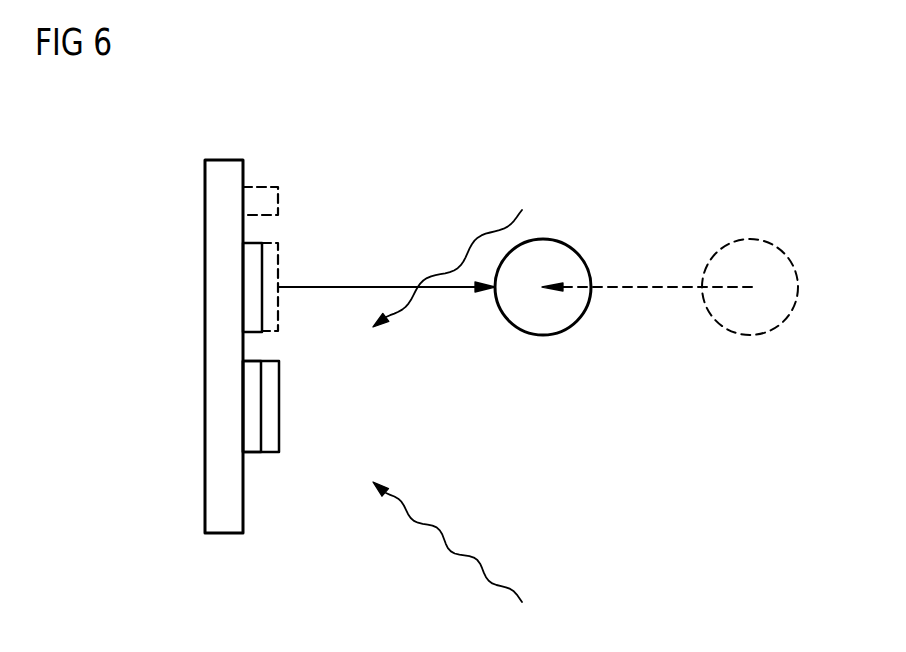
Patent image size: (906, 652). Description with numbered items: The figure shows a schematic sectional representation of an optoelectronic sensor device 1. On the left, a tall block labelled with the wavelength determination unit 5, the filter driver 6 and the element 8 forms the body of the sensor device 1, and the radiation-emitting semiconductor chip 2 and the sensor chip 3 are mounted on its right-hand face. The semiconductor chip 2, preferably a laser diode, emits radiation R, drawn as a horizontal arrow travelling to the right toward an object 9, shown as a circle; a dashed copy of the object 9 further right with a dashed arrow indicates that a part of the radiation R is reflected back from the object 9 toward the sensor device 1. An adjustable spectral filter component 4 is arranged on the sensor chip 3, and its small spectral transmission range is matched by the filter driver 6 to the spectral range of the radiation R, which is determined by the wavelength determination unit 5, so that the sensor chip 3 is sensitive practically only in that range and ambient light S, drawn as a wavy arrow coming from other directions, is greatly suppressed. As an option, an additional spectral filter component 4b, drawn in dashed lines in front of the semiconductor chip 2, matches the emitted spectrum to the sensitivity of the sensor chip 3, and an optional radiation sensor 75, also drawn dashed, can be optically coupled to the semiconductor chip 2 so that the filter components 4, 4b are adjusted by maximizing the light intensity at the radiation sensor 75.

The optoelectronic sensor device 1 is at (188, 343).
The wavelength determination unit 5 is at (225, 317).
The filter driver 6 is at (225, 317).
The base element 8 is at (222, 160).
The radiation sensor 75 is at (278, 203).
The radiation-emitting semiconductor chip 2 is at (253, 333).
The additional spectral filter component 4b is at (279, 257).
The spectral filter component 4 is at (280, 405).
The sensor chip 3 is at (253, 455).
The radiation R is at (378, 287).
The ambient light S is at (481, 236).
The object 9 is at (545, 240).